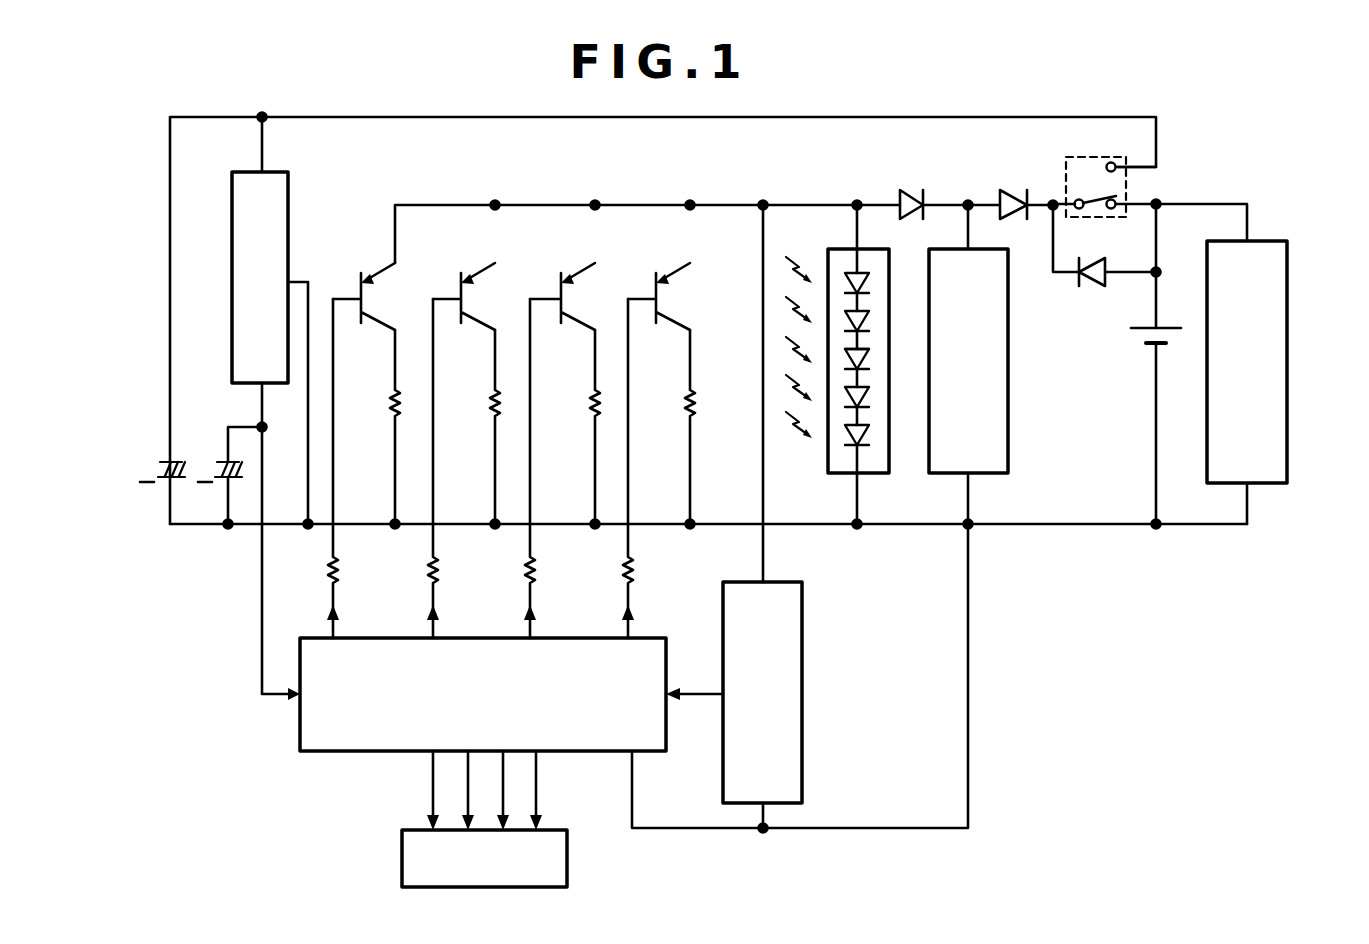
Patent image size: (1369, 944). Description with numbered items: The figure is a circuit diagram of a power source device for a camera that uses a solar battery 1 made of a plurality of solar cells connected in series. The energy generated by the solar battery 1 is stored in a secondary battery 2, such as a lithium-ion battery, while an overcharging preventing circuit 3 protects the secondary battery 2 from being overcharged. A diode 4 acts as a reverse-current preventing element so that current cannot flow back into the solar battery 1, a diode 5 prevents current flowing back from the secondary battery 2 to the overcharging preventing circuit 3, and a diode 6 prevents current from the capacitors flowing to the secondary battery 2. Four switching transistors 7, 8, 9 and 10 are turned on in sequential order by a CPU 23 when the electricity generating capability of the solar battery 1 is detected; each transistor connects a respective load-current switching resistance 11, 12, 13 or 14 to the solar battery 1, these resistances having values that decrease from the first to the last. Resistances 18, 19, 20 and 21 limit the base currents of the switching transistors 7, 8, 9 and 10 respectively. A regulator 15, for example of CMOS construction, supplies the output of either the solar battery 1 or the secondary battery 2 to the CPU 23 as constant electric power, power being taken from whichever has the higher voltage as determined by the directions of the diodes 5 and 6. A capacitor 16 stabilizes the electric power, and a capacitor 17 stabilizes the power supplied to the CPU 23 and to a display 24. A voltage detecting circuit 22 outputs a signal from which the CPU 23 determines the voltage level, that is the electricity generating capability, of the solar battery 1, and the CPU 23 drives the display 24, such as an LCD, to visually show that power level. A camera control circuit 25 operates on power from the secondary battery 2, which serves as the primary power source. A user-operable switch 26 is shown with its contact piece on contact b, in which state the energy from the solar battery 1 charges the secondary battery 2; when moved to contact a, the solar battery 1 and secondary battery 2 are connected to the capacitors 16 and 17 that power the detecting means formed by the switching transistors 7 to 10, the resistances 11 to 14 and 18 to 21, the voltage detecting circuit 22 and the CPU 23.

The solar battery 1 is at (828, 462).
The secondary battery 2 is at (1146, 344).
The overcharging preventing circuit 3 is at (1008, 452).
The diode 4 is at (910, 192).
The diode 5 is at (1008, 192).
The diode 6 is at (1093, 288).
The switching transistor 7 is at (688, 288).
The switching transistor 8 is at (585, 288).
The switching transistor 9 is at (484, 288).
The switching transistor 10 is at (384, 288).
The resistance 11 is at (680, 404).
The resistance 12 is at (585, 404).
The resistance 13 is at (485, 404).
The resistance 14 is at (385, 404).
The regulator 15 is at (288, 195).
The capacitor 16 is at (163, 458).
The capacitor 17 is at (223, 458).
The resistance 18 is at (635, 570).
The resistance 19 is at (537, 570).
The resistance 20 is at (440, 570).
The resistance 21 is at (340, 570).
The voltage detecting circuit 22 is at (802, 772).
The CPU 23 is at (340, 752).
The display 24 is at (402, 862).
The camera control circuit 25 is at (1287, 455).
The switch 26 is at (1090, 155).